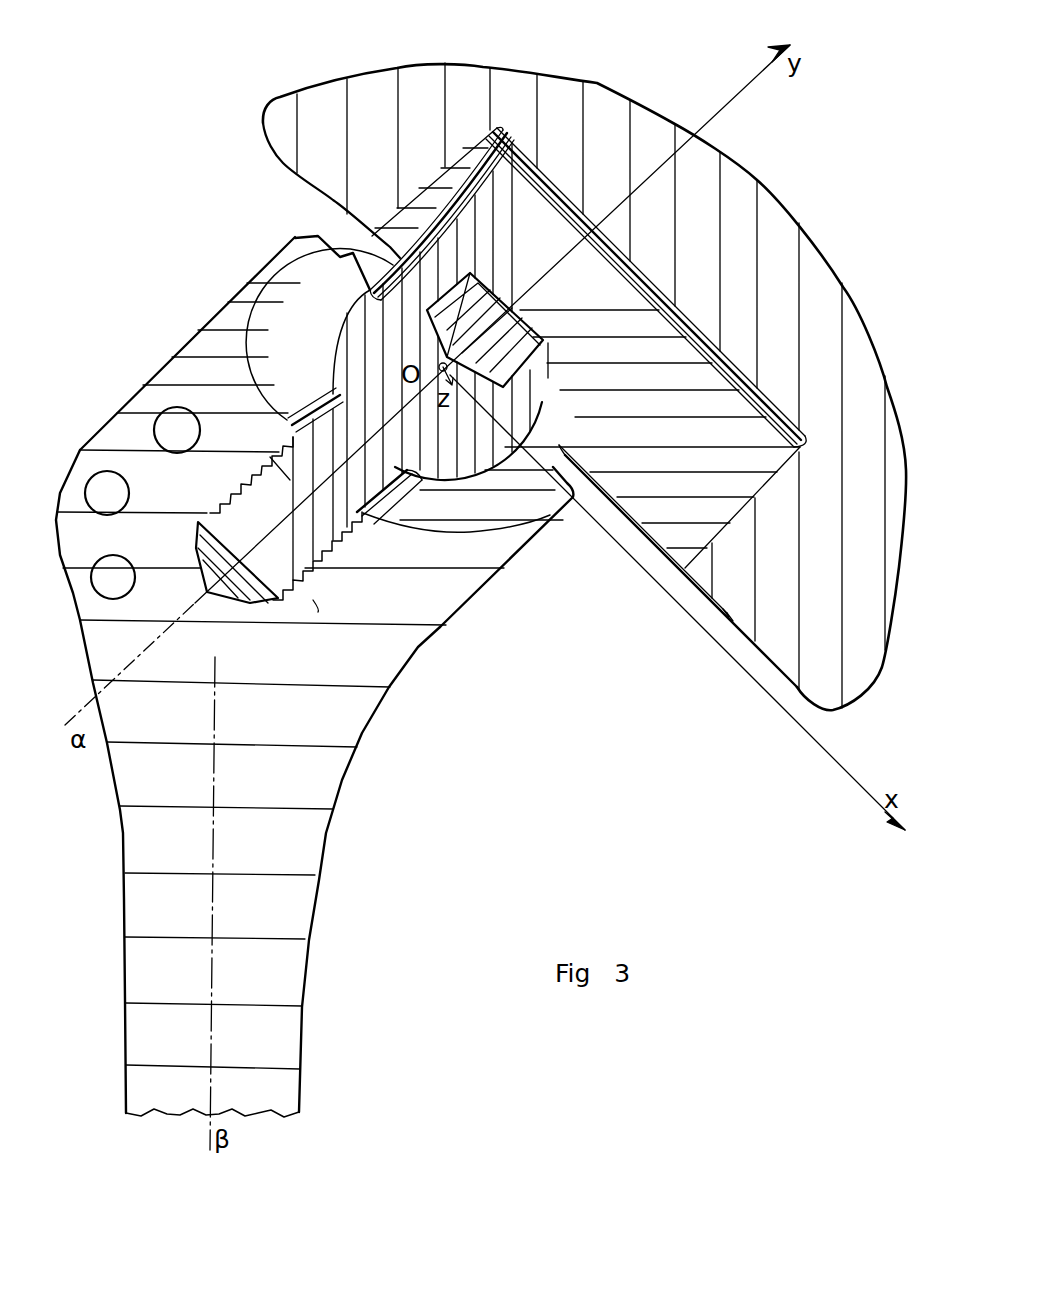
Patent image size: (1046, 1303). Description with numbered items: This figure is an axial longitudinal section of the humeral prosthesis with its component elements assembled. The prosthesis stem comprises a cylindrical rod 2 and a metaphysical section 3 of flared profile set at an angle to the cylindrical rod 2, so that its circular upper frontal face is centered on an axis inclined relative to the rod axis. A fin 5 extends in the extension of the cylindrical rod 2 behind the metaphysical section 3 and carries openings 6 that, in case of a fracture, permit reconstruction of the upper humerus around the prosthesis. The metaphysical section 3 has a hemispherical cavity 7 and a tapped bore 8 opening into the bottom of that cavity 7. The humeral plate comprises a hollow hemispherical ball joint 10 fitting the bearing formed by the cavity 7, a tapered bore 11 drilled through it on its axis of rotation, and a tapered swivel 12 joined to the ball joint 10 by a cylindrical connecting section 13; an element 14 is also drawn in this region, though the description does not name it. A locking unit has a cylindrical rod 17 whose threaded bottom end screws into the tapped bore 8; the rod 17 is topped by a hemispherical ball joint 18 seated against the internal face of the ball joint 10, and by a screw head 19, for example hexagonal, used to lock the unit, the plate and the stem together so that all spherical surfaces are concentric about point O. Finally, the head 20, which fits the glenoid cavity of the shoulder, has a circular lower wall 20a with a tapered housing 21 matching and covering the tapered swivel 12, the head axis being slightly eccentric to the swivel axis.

The cylindrical rod 2 is at (293, 970).
The metaphysical section 3 is at (445, 607).
The fin 5 is at (82, 450).
The openings 6 is at (178, 430).
The hemispherical cavity 7 is at (462, 516).
The tapped bore 8 is at (313, 600).
The hollow hemispherical ball joint 10 is at (520, 505).
The tapered bore 11 is at (290, 340).
The swivel 12 is at (657, 517).
The cylindrical connecting section 13 is at (560, 484).
The sleeve 14 is at (500, 207).
The cylindrical rod 17 is at (275, 445).
The hemispherical ball joint 18 is at (300, 262).
The screw head 19 is at (355, 232).
The head 20 is at (876, 412).
The circular lower wall 20a is at (737, 627).
The tapered housing 21 is at (767, 410).